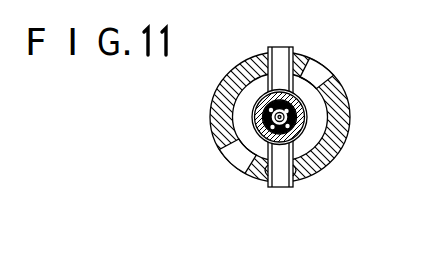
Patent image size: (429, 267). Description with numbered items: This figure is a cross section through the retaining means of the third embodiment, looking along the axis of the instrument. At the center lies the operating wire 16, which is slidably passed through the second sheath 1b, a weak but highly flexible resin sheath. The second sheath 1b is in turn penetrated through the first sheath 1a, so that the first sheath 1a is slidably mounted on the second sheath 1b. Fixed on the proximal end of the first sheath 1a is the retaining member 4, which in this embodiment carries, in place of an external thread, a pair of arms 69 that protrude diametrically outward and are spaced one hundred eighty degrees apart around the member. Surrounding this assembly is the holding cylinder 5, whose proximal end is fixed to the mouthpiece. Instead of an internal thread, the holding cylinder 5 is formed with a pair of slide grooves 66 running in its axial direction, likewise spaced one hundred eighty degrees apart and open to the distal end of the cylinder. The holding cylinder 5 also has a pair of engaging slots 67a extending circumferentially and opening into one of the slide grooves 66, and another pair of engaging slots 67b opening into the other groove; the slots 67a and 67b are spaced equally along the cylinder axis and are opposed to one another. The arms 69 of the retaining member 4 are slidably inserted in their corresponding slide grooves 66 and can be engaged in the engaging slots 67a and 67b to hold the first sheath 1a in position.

The first sheath 1a is at (262, 96).
The second sheath 1b is at (260, 125).
The retaining member 4 is at (326, 131).
The holding cylinder 5 is at (345, 101).
The operating wire 16 is at (258, 117).
The slide grooves 66 is at (271, 47).
The engaging slots 67a is at (242, 163).
The engaging slots 67b is at (321, 68).
The arms 69 is at (290, 48).